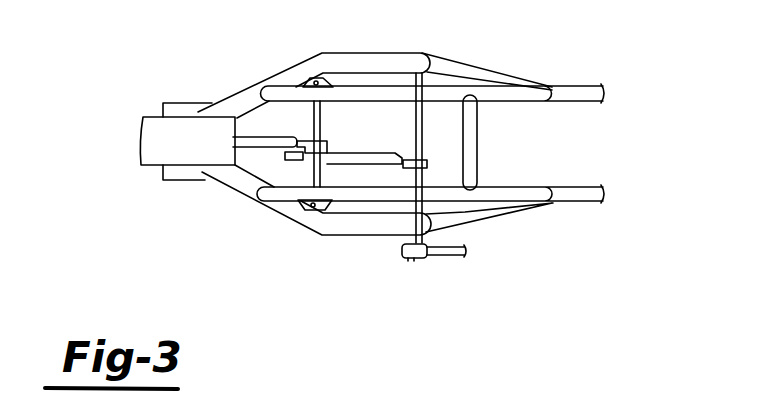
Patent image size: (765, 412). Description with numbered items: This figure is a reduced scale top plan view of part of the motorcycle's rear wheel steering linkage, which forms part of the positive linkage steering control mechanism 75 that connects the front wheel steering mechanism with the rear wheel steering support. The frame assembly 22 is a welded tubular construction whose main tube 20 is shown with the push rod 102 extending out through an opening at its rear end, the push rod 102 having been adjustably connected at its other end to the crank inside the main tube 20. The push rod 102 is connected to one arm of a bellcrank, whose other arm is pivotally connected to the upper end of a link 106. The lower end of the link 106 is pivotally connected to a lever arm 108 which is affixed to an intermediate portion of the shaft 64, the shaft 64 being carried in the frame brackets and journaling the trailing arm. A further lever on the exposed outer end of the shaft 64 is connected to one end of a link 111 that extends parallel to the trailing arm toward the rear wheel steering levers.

The main tube 20 is at (161, 148).
The frame assembly 22 is at (474, 61).
The shaft 64 is at (426, 126).
The steering control mechanism 75 is at (332, 137).
The push rod 102 is at (258, 146).
The link 106 is at (362, 163).
The lever arm 108 is at (428, 162).
The link 111 is at (450, 258).